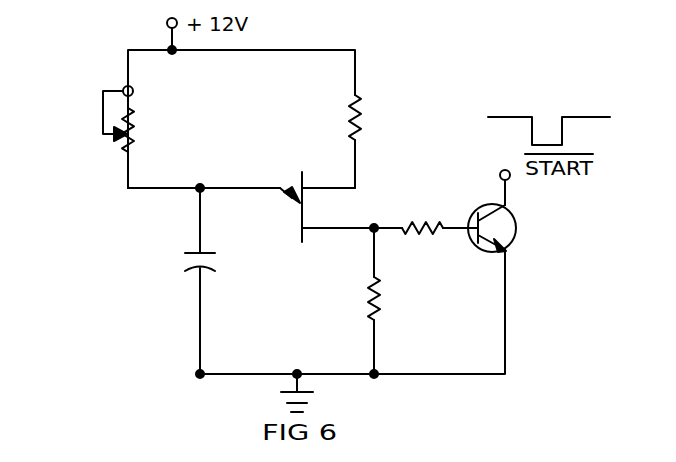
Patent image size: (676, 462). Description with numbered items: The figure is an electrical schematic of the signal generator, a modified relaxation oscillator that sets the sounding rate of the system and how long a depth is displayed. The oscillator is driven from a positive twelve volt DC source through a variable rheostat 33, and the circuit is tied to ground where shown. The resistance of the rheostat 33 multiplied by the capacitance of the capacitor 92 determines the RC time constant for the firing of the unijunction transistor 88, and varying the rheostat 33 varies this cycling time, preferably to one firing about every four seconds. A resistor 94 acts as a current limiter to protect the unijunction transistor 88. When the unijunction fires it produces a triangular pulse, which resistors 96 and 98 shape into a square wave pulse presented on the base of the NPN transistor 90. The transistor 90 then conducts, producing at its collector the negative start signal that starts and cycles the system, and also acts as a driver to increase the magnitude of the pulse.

The variable rheostat 33 is at (101, 116).
The resistor 94 is at (364, 125).
The unijunction transistor 88 is at (312, 213).
The capacitor 92 is at (217, 268).
The resistor 96 is at (430, 236).
The resistor 98 is at (383, 303).
The NPN transistor 90 is at (516, 238).